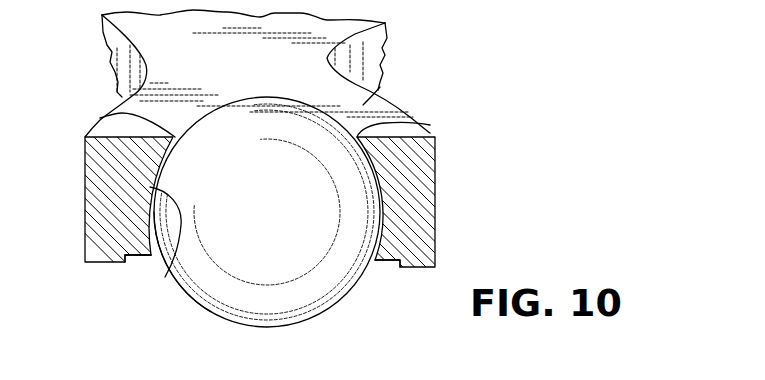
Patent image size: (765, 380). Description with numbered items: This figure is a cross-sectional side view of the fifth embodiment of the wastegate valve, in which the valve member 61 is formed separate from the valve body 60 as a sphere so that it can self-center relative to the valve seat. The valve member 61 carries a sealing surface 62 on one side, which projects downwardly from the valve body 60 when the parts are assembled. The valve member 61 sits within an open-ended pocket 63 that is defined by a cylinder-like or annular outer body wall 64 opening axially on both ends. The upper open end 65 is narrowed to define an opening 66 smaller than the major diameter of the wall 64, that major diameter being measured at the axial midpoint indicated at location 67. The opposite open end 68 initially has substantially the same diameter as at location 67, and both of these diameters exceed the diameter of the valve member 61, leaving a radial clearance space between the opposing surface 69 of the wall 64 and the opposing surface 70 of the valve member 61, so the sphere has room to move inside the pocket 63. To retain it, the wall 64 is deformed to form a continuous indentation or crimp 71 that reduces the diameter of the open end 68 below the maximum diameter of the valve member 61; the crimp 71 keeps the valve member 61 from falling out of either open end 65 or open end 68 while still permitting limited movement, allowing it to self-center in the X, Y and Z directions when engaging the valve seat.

The valve body 60 is at (382, 79).
The valve member 61 is at (208, 153).
The sealing surface 62 is at (248, 300).
The open-ended pocket 63 is at (317, 104).
The outer body wall 64 is at (103, 227).
The upper open end 65 is at (430, 125).
The opening 66 is at (100, 118).
The axial midpoint location 67 is at (380, 192).
The opposite open end 68 is at (172, 225).
The opposing surface of the wall 69 is at (178, 228).
The opposing surface of the valve member 70 is at (150, 187).
The crimp 71 is at (137, 256).